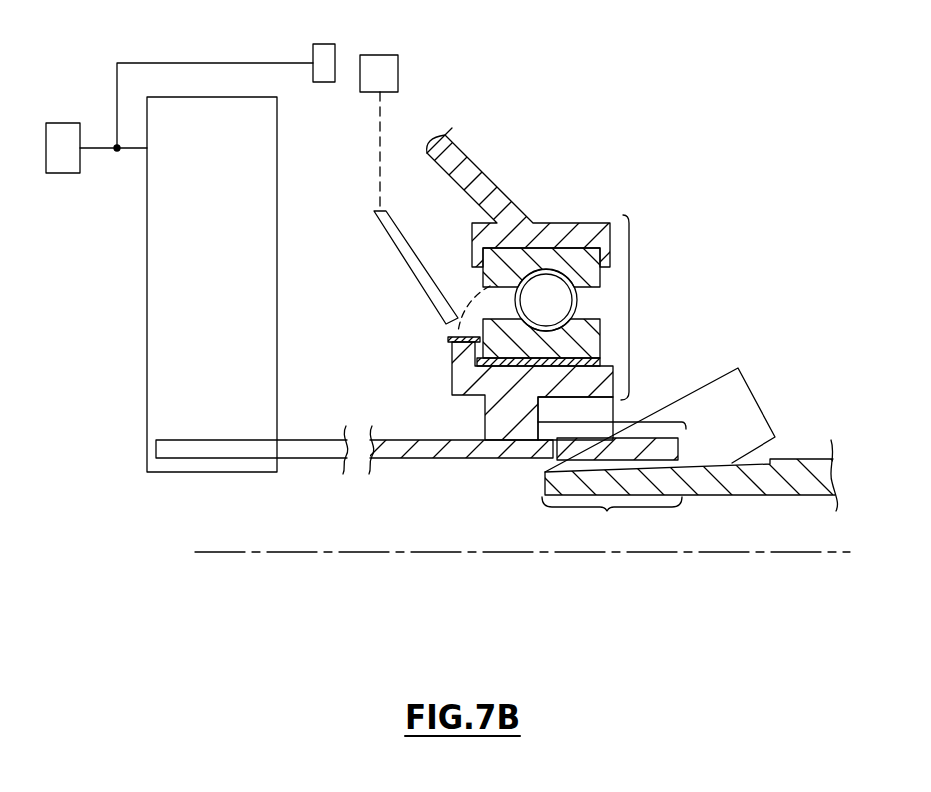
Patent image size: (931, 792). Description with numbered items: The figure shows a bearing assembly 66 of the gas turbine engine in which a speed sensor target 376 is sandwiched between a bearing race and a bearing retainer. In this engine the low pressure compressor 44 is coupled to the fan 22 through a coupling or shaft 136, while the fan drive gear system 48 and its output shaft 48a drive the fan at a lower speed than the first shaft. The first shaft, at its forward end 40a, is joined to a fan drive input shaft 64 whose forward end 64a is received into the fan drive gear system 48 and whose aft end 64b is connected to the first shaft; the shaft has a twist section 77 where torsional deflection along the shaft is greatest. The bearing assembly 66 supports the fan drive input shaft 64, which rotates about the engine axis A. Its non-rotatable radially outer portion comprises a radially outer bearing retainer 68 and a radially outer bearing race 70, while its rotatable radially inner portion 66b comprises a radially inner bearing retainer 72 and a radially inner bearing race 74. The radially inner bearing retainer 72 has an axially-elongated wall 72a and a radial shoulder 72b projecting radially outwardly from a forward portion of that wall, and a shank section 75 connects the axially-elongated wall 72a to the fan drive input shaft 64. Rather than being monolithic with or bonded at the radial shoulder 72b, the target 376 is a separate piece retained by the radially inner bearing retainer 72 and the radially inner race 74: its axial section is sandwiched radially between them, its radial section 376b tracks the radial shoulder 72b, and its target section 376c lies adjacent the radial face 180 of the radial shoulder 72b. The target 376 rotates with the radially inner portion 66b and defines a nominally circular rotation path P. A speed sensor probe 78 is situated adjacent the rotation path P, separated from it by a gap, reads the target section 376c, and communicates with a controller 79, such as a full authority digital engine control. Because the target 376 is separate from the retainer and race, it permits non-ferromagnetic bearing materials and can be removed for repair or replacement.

The coupling shaft 136 is at (205, 63).
The fan 22 is at (61, 173).
The output shaft 48a is at (130, 148).
The low pressure compressor 44 is at (332, 44).
The controller 79 is at (387, 55).
The fan drive gear system 48 is at (277, 185).
The speed sensor probe 78 is at (385, 230).
The radially outer bearing retainer 68 is at (556, 230).
The radially outer bearing race 70 is at (600, 277).
The bearing assembly 66 is at (629, 283).
The radially inner portion 66b is at (610, 319).
The rotation path P is at (473, 297).
The radially inner bearing race 74 is at (576, 350).
The radial shoulder 72b is at (478, 371).
The radial face 180 is at (447, 338).
The target section 376c is at (447, 331).
The target 376 is at (447, 337).
The radial section 376b is at (453, 343).
The radially inner bearing retainer 72 is at (603, 395).
The axially-elongated wall 72a is at (598, 375).
The shank section 75 is at (485, 402).
The aft end 64b is at (463, 418).
The forward end 64a is at (228, 429).
The fan drive input shaft 64 is at (313, 458).
The twist section 77 is at (760, 398).
The forward end 40a is at (607, 508).
The engine axis A is at (360, 553).